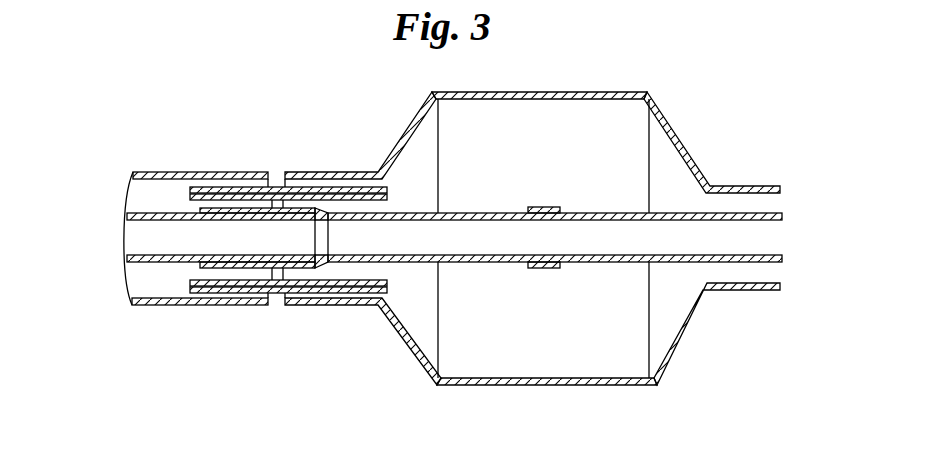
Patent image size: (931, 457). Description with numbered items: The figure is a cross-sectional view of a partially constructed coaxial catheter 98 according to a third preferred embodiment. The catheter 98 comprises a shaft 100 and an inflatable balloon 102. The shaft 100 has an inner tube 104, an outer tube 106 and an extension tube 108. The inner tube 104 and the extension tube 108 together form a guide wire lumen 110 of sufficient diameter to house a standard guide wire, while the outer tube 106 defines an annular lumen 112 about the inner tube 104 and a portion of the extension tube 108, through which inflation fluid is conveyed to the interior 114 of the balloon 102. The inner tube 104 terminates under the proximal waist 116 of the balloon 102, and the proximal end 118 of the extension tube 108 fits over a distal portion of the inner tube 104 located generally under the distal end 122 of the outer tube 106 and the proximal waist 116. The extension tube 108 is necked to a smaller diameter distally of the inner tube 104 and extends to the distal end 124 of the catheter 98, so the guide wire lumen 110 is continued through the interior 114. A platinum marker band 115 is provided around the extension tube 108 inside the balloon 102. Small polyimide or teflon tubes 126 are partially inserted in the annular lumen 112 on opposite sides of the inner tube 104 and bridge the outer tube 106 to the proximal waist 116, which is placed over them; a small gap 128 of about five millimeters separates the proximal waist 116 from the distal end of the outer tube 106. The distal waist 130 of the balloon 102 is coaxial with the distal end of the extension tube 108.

The catheter 98 is at (182, 122).
The shaft 100 is at (238, 158).
The inflatable balloon 102 is at (677, 123).
The inner tube 104 is at (157, 263).
The outer tube 106 is at (160, 307).
The extension tube 108 is at (413, 262).
The guide wire lumen 110 is at (150, 240).
The annular lumen 112 is at (157, 195).
The interior 114 is at (507, 348).
The platinum marker band 115 is at (550, 268).
The proximal waist 116 is at (357, 171).
The proximal end of the extension tube 118 is at (207, 272).
The distal end of the outer shaft 122 is at (258, 186).
The distal end of the catheter 124 is at (763, 300).
The polyimide or teflon tubes 126 is at (193, 172).
The gap 128 is at (278, 167).
The distal waist 130 is at (750, 183).